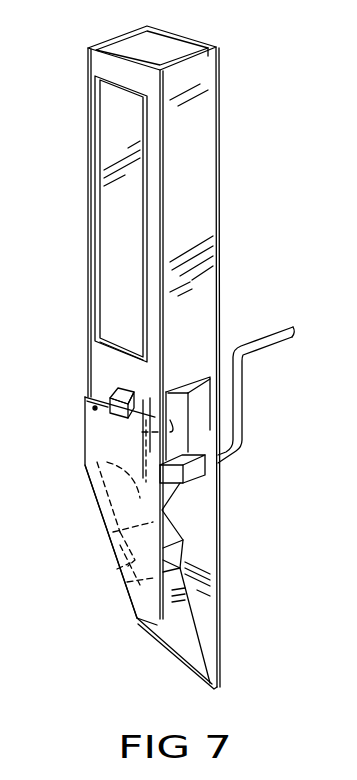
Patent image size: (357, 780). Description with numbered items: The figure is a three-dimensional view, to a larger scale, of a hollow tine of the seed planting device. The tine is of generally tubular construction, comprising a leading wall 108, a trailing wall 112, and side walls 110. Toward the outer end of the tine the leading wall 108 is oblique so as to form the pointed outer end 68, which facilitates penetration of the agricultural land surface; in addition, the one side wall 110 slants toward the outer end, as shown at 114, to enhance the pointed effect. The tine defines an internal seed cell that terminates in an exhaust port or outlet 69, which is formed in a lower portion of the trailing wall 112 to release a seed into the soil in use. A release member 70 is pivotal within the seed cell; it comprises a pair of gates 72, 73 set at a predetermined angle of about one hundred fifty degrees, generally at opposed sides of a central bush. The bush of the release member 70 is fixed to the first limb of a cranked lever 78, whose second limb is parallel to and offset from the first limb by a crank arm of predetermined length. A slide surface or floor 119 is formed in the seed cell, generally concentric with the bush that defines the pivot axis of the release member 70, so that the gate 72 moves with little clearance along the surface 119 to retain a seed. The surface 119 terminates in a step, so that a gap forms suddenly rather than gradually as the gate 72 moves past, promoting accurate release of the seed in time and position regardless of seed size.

The trailing wall 112 is at (208, 202).
The leading wall 108 is at (118, 121).
The side wall 110 is at (112, 377).
The gate 73 is at (140, 427).
The gate 72 is at (85, 465).
The pointed outer end 68 is at (112, 552).
The slide surface 119 is at (120, 567).
The release member 70 is at (175, 380).
The cranked lever 78 is at (255, 405).
The outlet 69 is at (208, 548).
The slanted portion of side wall 114 is at (167, 643).